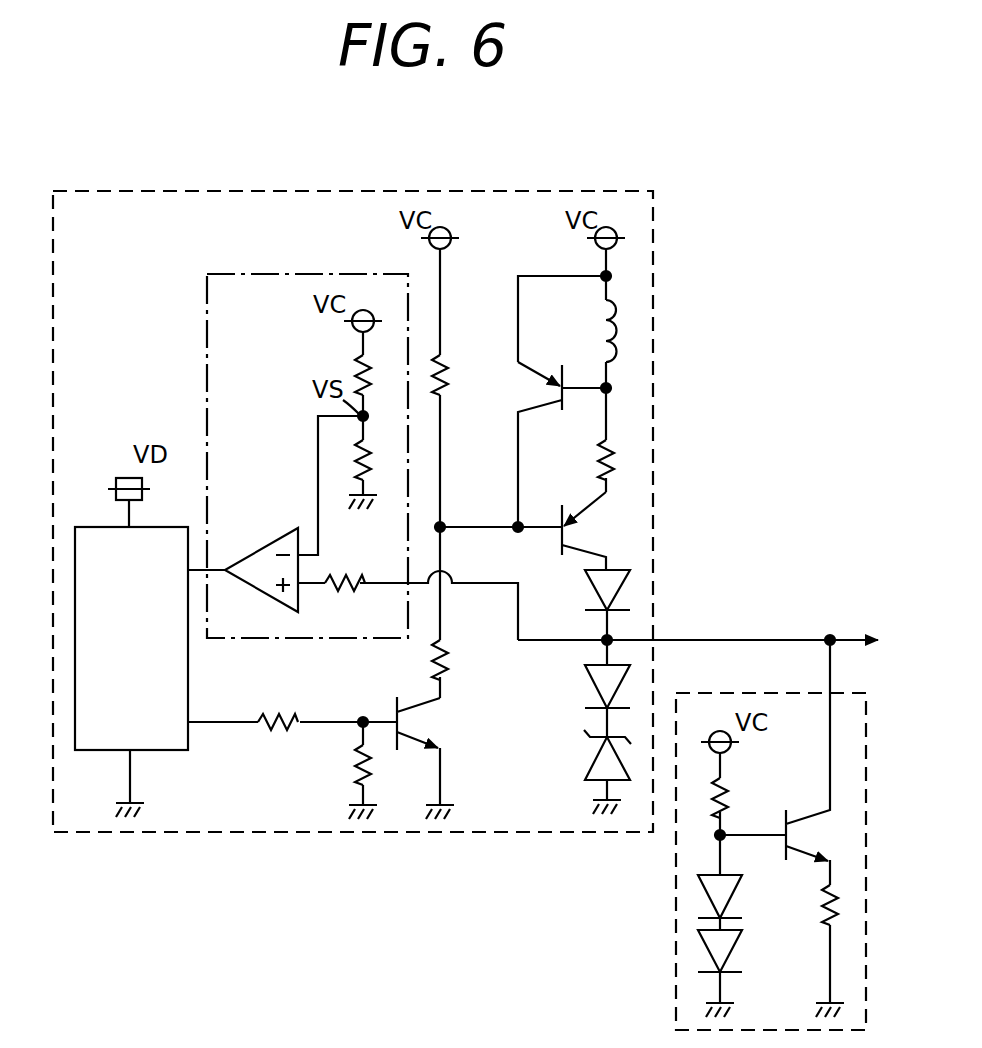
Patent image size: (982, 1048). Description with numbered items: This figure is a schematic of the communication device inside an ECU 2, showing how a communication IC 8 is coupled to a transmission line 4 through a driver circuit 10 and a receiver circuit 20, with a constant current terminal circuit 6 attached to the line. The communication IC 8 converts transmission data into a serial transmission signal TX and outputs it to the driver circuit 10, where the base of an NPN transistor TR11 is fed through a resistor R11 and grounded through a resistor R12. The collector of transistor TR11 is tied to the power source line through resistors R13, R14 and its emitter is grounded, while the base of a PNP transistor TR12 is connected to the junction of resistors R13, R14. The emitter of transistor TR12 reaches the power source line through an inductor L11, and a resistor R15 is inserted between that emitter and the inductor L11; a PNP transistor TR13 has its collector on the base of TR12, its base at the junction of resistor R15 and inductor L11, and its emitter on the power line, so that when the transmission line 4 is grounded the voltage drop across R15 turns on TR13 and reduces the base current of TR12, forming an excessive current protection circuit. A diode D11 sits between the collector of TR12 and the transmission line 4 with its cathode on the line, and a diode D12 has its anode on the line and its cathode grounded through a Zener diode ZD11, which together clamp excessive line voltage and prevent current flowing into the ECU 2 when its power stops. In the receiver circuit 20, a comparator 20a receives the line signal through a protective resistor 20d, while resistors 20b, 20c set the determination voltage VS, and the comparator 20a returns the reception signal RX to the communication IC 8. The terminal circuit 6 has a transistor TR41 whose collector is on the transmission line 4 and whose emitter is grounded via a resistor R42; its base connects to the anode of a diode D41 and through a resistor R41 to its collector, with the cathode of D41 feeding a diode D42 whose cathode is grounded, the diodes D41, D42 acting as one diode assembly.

The ECU 2 is at (511, 192).
The receiver circuit 20 is at (240, 274).
The comparator 20a is at (262, 548).
The resistor 20b is at (353, 364).
The resistor 20c is at (353, 456).
The resistor 20d is at (346, 575).
The communication IC 8 is at (88, 527).
The driver circuit 10 is at (634, 461).
The transmission line 4 is at (846, 639).
The terminal circuit 6 is at (676, 943).
The resistor R11 is at (283, 713).
The resistor R12 is at (353, 767).
The resistor R13 is at (452, 384).
The resistor R14 is at (452, 656).
The resistor R15 is at (600, 456).
The NPN transistor TR11 is at (430, 723).
The PNP transistor TR12 is at (598, 515).
The PNP transistor TR13 is at (524, 383).
The inductor L11 is at (612, 324).
The diode D11 is at (586, 593).
The diode D12 is at (585, 684).
The Zener diode ZD11 is at (591, 748).
The resistor R41 is at (729, 797).
The resistor R42 is at (824, 911).
The transistor TR41 is at (808, 828).
The diode D41 is at (742, 891).
The diode D42 is at (739, 952).